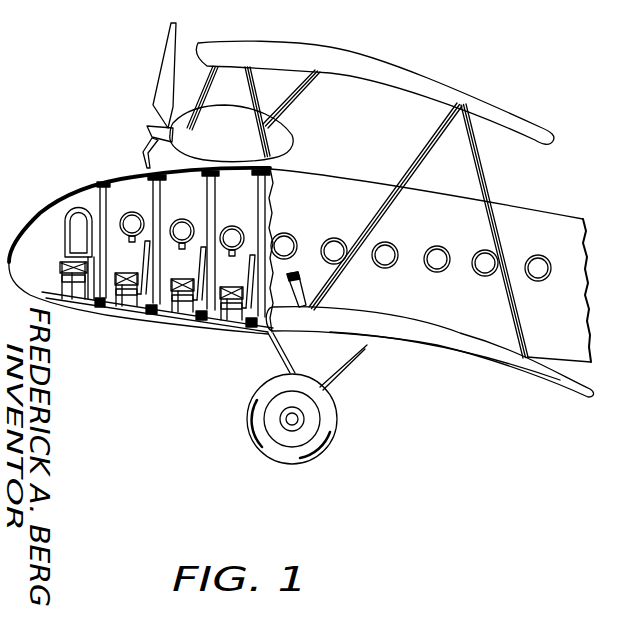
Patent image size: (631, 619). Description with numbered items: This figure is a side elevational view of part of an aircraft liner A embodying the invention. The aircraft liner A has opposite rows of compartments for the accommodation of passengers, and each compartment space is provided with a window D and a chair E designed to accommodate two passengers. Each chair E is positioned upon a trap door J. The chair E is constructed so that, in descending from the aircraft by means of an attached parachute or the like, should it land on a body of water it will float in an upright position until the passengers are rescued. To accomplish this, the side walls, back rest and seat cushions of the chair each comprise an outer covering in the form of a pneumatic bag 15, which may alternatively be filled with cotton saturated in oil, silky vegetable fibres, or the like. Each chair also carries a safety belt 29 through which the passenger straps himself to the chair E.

The aircraft liner A is at (325, 190).
The window D is at (131, 221).
The safety belt 29 is at (119, 273).
The pneumatic bag 15 is at (75, 281).
The chair E is at (123, 295).
The trap door J is at (178, 318).